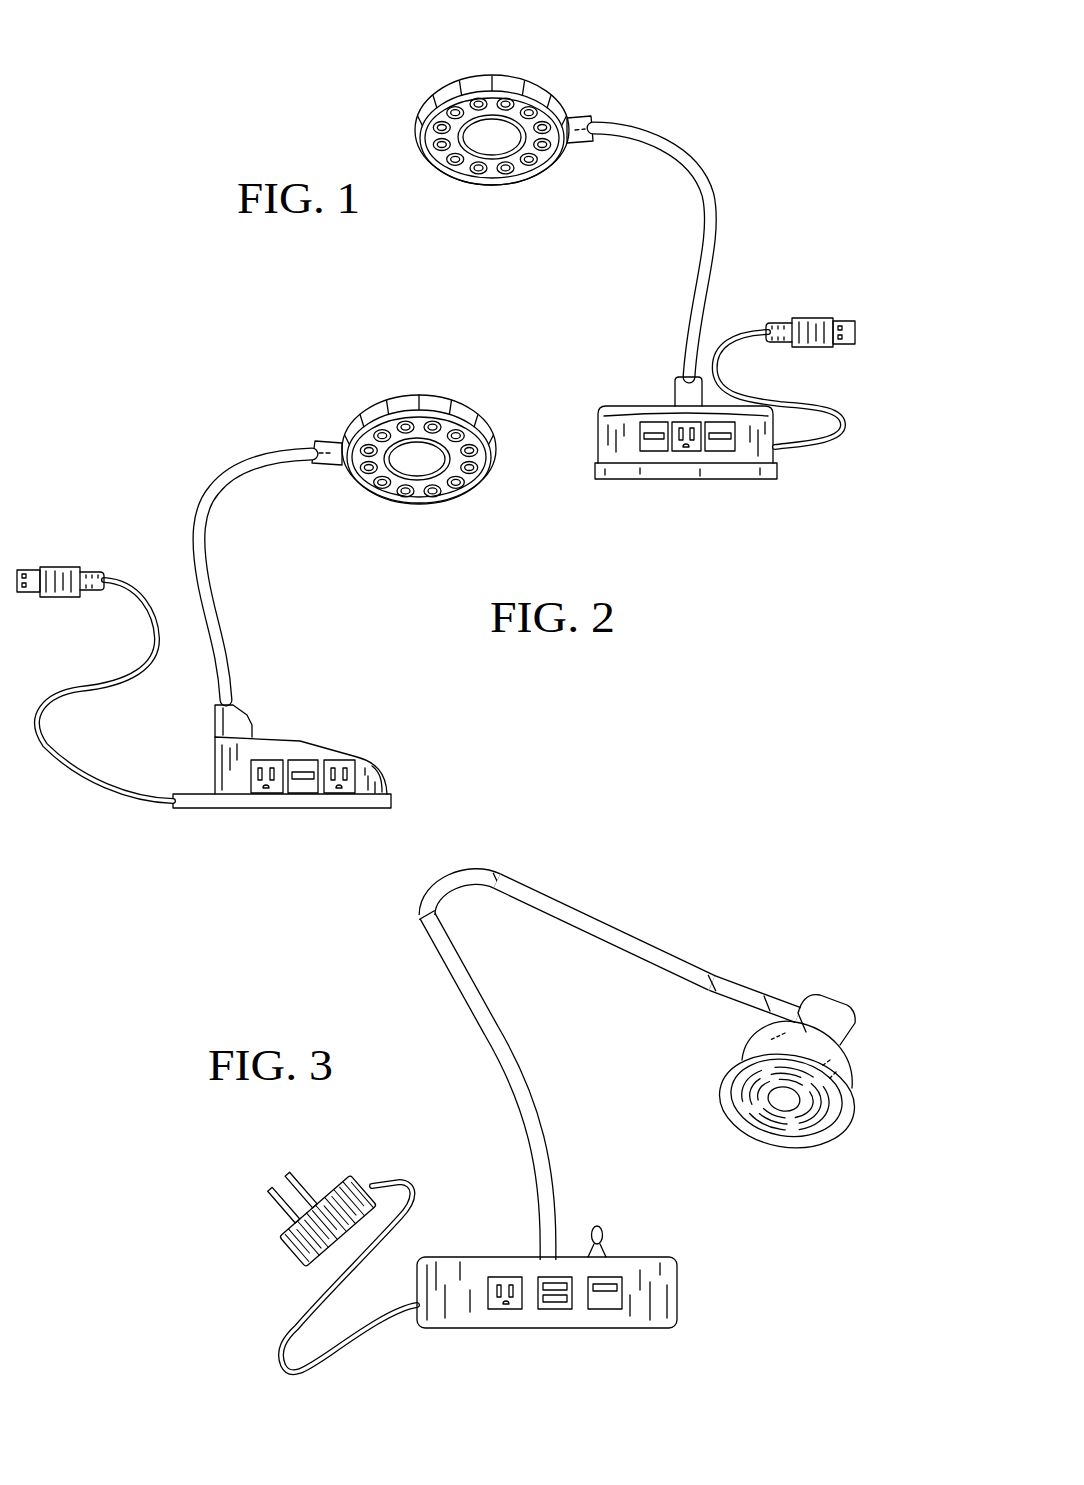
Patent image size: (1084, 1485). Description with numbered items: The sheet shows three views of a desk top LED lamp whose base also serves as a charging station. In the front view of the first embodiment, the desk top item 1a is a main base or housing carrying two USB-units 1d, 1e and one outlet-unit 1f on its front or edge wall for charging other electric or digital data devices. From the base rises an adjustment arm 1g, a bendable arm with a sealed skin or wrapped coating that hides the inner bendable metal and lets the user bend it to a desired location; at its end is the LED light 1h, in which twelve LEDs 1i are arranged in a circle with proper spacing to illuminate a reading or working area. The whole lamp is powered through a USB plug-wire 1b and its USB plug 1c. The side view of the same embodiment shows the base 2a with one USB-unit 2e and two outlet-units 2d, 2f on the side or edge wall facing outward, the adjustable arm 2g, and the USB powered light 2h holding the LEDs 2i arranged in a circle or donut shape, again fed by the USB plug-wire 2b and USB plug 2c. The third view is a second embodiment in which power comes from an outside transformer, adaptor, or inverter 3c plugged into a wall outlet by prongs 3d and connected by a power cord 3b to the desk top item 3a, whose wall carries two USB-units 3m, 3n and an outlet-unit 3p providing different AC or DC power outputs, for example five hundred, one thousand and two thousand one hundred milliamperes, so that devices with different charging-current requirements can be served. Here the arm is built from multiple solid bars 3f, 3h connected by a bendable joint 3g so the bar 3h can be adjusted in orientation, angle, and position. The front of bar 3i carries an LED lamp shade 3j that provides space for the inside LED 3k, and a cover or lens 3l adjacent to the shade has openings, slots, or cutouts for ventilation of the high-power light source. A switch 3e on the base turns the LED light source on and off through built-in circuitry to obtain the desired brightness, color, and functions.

In FIG. 1, the desk top item 1a is at (667, 436).
In FIG. 1, the USB plug-wire 1b is at (834, 440).
In FIG. 1, the USB plug 1c is at (806, 326).
In FIG. 1, the USB-unit 1d is at (720, 450).
In FIG. 1, the USB-unit 1e is at (645, 444).
In FIG. 1, the outlet-unit 1f is at (678, 427).
In FIG. 1, the adjustment arm 1g is at (641, 138).
In FIG. 1, the LED light 1h is at (504, 135).
In FIG. 1, the LEDs 1i is at (506, 174).
In FIG. 2, the base 2a is at (283, 786).
In FIG. 2, the USB plug-wire 2b is at (124, 778).
In FIG. 2, the USB plug 2c is at (60, 571).
In FIG. 2, the outlet-unit 2d is at (280, 791).
In FIG. 2, the USB-unit 2e is at (305, 791).
In FIG. 2, the outlet-unit 2f is at (352, 791).
In FIG. 2, the adjustable arm 2g is at (210, 566).
In FIG. 2, the USB powered light 2h is at (404, 450).
In FIG. 2, the LEDs 2i is at (456, 489).
In FIG. 3, the desk top item 3a is at (581, 1291).
In FIG. 3, the power cord 3b is at (405, 1188).
In FIG. 3, the transformer, adaptor, or inverter 3c is at (280, 1186).
In FIG. 3, the prongs 3d is at (268, 1189).
In FIG. 3, the switch 3e is at (598, 1254).
In FIG. 3, the bar 3f is at (470, 1013).
In FIG. 3, the bendable joint 3g is at (448, 881).
In FIG. 3, the bar 3h is at (600, 924).
In FIG. 3, the front of bar 3i is at (723, 988).
In FIG. 3, the LED lamp shade 3j is at (760, 1090).
In FIG. 3, the LED 3k is at (783, 1101).
In FIG. 3, the cover or lens 3l is at (733, 1088).
In FIG. 3, the USB-unit 3m is at (602, 1308).
In FIG. 3, the USB-unit 3n is at (553, 1308).
In FIG. 3, the outlet-unit 3p is at (493, 1294).